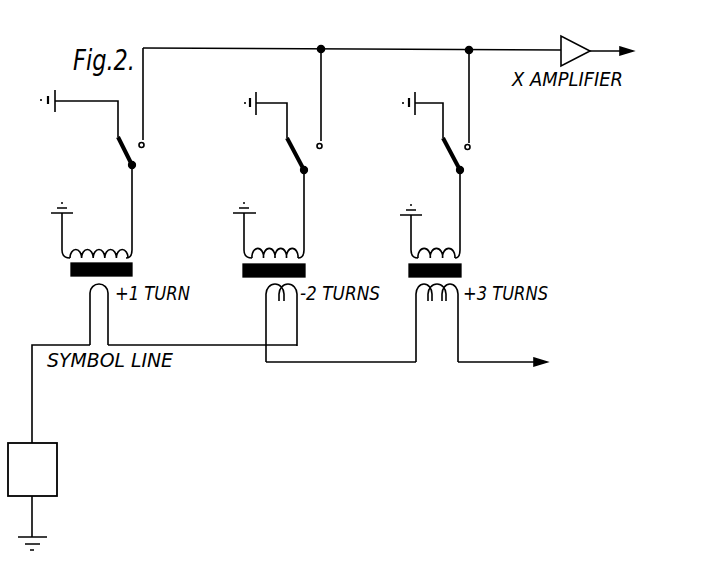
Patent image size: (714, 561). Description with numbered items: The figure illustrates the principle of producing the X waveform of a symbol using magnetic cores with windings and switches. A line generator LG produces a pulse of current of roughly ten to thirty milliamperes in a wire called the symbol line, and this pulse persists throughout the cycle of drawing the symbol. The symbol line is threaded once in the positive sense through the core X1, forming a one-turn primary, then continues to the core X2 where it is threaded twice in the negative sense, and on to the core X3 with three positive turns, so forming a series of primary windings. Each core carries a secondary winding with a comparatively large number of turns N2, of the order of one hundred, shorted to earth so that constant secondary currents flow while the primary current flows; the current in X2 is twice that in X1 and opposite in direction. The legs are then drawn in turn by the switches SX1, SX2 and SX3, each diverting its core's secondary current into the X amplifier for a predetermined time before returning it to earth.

The switch SX1 is at (88, 129).
The switch SX2 is at (276, 133).
The switch SX3 is at (433, 133).
The secondary winding turns N2 is at (255, 211).
The magnetic core X1 is at (89, 302).
The magnetic core X2 is at (263, 310).
The magnetic core X3 is at (420, 310).
The line generator LG is at (32, 496).